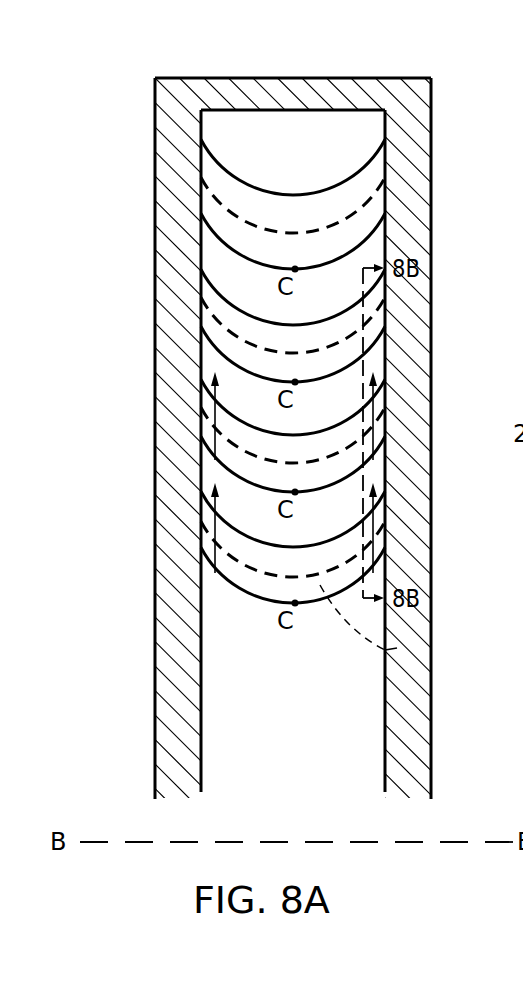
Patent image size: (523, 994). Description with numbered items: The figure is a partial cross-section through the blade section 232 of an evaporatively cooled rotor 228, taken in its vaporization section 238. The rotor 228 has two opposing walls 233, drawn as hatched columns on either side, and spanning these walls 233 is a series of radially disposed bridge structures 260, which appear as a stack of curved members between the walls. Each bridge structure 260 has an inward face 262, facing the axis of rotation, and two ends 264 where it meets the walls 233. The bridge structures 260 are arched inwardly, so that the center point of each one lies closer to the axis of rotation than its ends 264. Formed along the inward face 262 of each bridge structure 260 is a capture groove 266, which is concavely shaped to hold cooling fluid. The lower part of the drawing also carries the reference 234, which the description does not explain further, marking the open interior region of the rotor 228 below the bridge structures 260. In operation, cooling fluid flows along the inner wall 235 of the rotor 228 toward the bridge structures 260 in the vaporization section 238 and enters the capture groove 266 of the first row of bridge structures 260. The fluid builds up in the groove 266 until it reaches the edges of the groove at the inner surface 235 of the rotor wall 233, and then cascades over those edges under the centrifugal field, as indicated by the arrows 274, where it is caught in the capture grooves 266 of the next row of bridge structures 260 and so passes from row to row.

The rotor 228 is at (404, 60).
The blade section 232 is at (154, 103).
The walls 233 is at (178, 333).
The bore 234 is at (270, 746).
The inner wall 235 is at (208, 676).
The vaporization section 238 is at (312, 150).
The bridge structure 260 is at (240, 178).
The inward face 262 is at (213, 233).
The ends 264 is at (203, 175).
The capture groove 266 is at (386, 356).
The arrows 274 is at (217, 384).